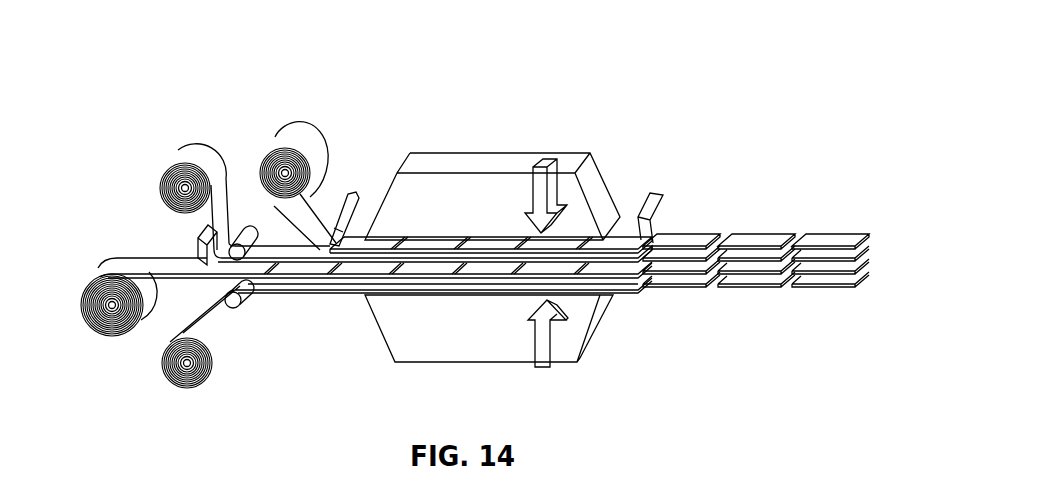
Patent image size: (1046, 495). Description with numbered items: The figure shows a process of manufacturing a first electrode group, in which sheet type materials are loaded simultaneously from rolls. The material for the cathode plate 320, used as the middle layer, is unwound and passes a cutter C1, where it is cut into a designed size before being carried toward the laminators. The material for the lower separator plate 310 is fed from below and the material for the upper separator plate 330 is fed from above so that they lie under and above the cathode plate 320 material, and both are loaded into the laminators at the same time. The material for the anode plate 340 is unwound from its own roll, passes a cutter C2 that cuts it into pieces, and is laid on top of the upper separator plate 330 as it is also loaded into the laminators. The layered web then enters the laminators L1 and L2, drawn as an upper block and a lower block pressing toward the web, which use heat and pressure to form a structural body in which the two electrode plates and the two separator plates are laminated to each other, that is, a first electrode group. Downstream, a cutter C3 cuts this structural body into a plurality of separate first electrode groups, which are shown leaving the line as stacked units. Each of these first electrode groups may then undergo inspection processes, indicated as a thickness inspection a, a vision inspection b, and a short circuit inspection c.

The separator plate 310 is at (240, 411).
The cathode plate 320 is at (83, 247).
The separator plate 330 is at (170, 188).
The anode plate 340 is at (364, 117).
The cutter C1 is at (200, 247).
The cutter C2 is at (352, 200).
The cutter C3 is at (651, 192).
The laminator L1 is at (482, 158).
The laminator L2 is at (472, 342).
The thickness inspection a is at (708, 299).
The vision inspection b is at (781, 299).
The short circuit inspection c is at (855, 299).